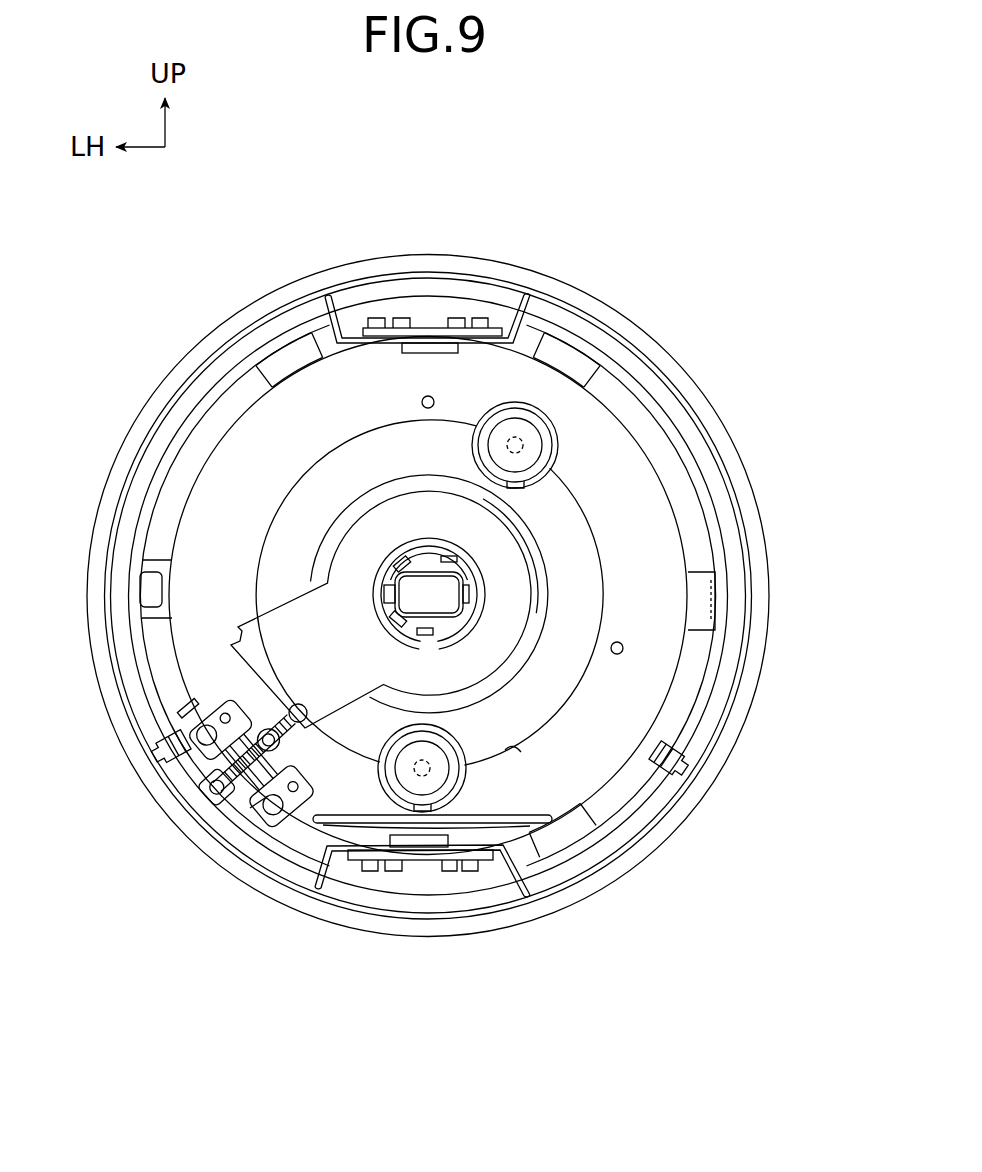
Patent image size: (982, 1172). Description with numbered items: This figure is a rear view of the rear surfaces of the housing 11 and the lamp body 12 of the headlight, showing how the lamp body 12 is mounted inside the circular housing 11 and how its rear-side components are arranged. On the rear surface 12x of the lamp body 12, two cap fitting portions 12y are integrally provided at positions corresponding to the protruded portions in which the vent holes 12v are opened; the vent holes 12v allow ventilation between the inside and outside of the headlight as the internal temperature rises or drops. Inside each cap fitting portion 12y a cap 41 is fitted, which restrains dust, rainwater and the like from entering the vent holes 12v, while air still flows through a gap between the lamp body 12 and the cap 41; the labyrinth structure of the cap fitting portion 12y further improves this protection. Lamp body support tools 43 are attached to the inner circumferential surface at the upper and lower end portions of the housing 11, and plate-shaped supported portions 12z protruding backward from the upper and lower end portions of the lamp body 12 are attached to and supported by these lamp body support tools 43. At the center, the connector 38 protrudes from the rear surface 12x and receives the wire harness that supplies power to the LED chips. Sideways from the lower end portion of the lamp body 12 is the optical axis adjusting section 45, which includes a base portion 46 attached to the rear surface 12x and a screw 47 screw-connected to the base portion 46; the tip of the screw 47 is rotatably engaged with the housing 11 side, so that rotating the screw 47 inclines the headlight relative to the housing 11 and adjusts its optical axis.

The housing 11 is at (208, 312).
The lamp body 12 is at (234, 478).
The rear surface 12x is at (205, 548).
The cap fitting portion 12y is at (560, 440).
The supported portion 12z is at (432, 325).
The vent hole 12v is at (520, 445).
The connector 38 is at (433, 617).
The cap 41 is at (532, 456).
The lamp body support tool 43 is at (343, 293).
The optical axis adjusting section 45 is at (241, 813).
The base portion 46 is at (225, 712).
The screw 47 is at (205, 777).